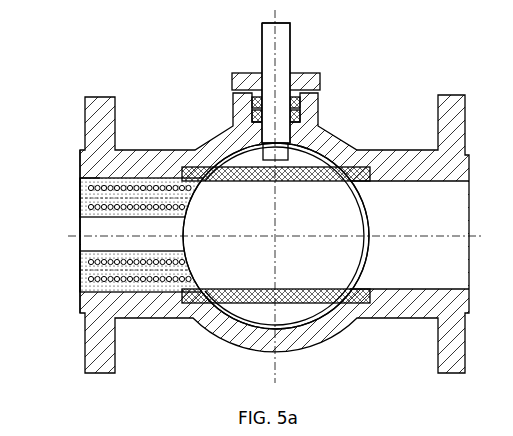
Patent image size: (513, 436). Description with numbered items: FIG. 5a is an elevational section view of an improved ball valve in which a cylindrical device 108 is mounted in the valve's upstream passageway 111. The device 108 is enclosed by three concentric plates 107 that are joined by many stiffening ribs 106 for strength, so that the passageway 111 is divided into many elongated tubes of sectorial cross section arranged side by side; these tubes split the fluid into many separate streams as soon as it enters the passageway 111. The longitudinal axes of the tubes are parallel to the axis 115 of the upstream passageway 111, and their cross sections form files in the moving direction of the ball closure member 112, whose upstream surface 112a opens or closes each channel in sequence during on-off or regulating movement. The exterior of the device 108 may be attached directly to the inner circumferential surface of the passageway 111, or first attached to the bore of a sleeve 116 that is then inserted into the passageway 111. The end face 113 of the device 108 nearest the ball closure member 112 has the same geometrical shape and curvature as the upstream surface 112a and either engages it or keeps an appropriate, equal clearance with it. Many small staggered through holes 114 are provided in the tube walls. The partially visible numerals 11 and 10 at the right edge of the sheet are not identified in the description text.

The stiffening ribs 106 is at (190, 206).
The concentric plates 107 is at (147, 160).
The cylindrical device 108 is at (80, 178).
The upstream passageway 111 is at (146, 306).
The ball closure member 112 is at (331, 148).
The upstream surface 112a is at (186, 236).
The end face 113 is at (188, 301).
The through holes 114 is at (186, 162).
The axis 115 is at (440, 236).
The sleeve 116 is at (100, 177).
The outlet bore 11 is at (431, 183).
The valve 10 is at (431, 280).